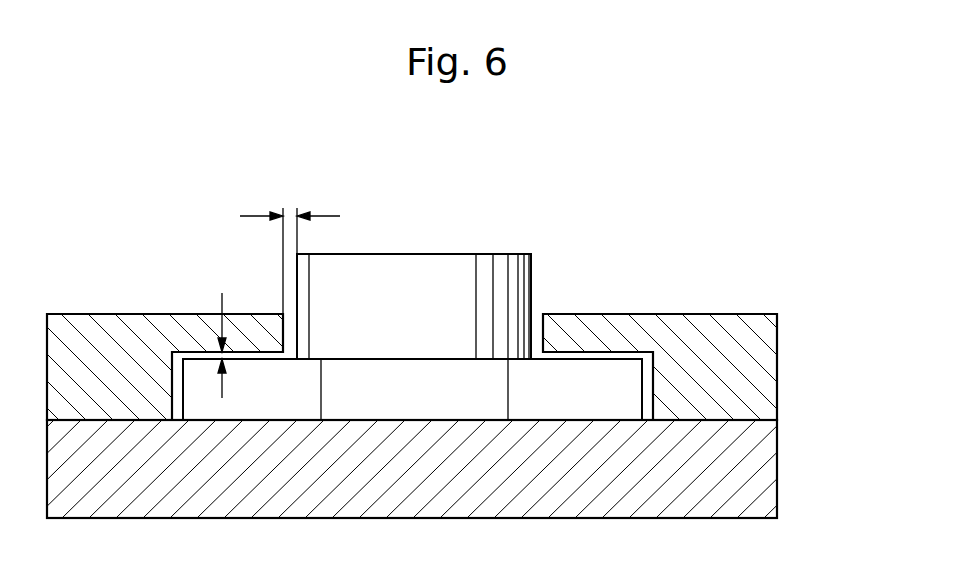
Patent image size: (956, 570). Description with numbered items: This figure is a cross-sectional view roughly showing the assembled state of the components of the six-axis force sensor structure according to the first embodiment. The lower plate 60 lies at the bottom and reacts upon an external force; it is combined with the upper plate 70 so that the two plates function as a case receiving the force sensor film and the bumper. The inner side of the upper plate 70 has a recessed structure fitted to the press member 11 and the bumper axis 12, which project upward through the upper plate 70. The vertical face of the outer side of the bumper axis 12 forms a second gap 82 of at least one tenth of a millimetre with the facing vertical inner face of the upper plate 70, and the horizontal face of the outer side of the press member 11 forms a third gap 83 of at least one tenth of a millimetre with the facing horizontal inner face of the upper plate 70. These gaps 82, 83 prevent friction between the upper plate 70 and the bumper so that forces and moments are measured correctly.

The lower plate 60 is at (750, 490).
The upper plate 70 is at (757, 342).
The press member 11 is at (630, 393).
The bumper axis 12 is at (456, 263).
The second gap 82 is at (252, 210).
The third gap 83 is at (220, 304).